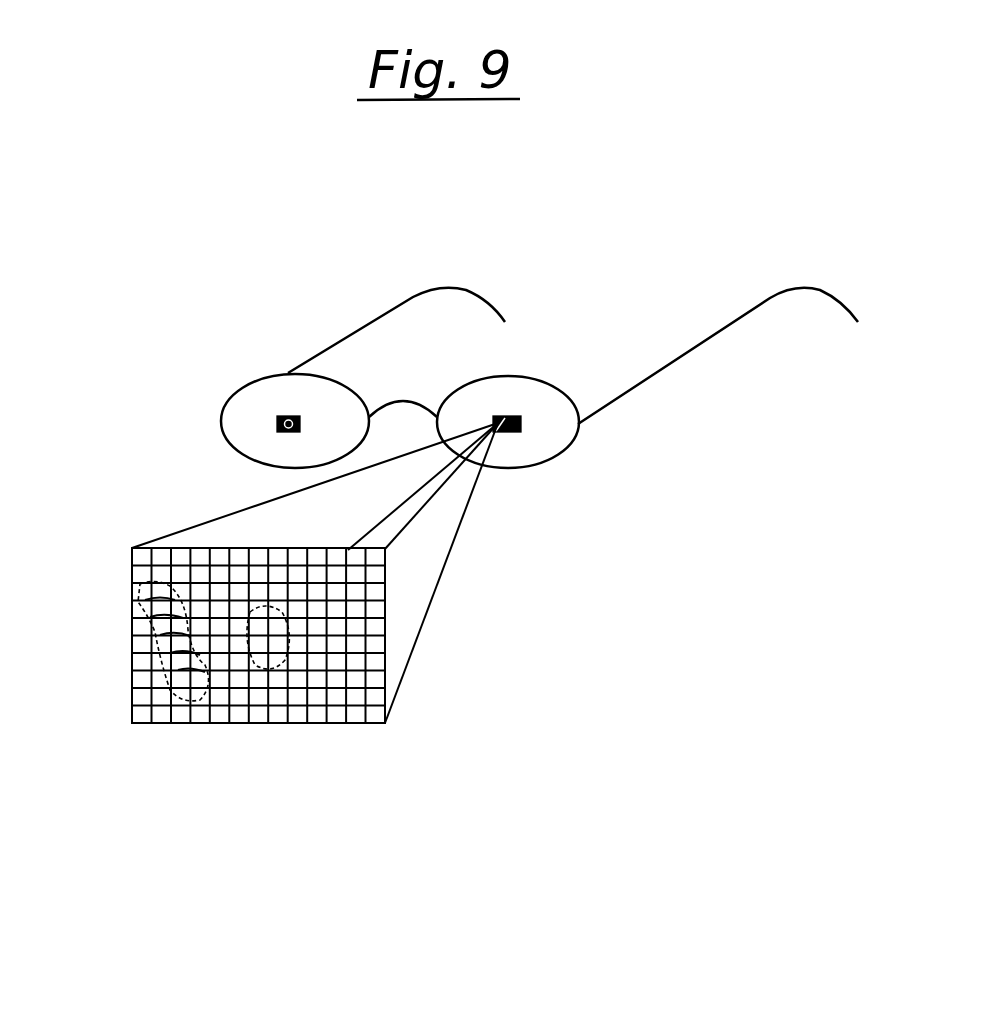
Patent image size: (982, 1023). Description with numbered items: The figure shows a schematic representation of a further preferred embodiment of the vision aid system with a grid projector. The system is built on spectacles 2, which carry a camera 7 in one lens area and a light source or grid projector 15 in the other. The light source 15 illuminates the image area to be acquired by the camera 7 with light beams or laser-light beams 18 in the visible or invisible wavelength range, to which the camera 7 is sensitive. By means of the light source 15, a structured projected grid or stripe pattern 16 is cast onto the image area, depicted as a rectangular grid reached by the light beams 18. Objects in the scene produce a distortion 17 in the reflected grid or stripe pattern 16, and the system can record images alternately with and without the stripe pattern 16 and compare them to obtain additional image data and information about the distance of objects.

The spectacles 2 is at (623, 395).
The camera 7 is at (279, 414).
The light source or grid projector 15 is at (512, 428).
The projected grid or stripe pattern 16 is at (253, 728).
The distortion in the reflected grid or stripe pattern 17 is at (145, 622).
The light beams or laser-light beams 18 is at (437, 603).